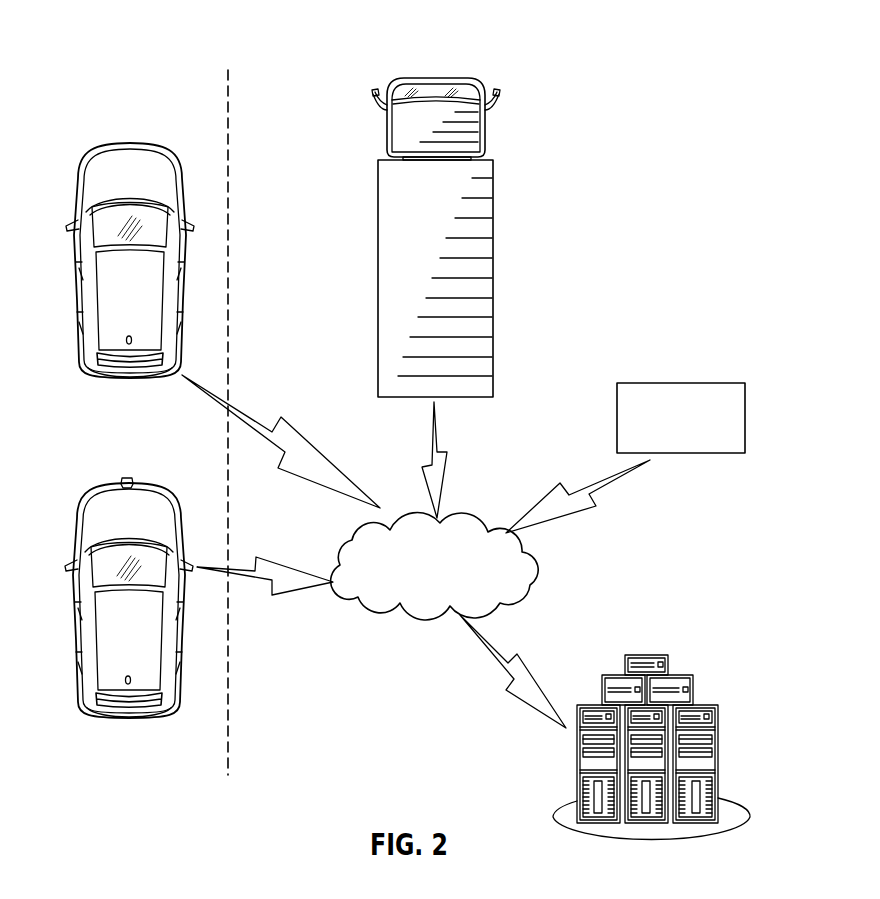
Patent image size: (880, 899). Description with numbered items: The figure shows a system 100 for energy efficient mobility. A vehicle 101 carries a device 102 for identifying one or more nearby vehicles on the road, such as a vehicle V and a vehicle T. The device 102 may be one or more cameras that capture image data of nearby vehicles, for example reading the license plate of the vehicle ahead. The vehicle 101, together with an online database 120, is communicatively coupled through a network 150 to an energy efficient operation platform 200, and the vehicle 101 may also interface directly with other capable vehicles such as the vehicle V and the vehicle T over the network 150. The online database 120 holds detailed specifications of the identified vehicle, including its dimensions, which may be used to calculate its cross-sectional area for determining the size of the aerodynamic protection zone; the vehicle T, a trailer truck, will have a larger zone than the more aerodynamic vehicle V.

The vehicle V is at (100, 150).
The vehicle T is at (493, 170).
The system for energy efficient mobility 100 is at (616, 190).
The vehicle 101 is at (92, 492).
The device for identifying one or more nearby vehicles 102 is at (126, 477).
The online database 120 is at (683, 383).
The network 150 is at (388, 532).
The energy efficient operation platform 200 is at (695, 688).